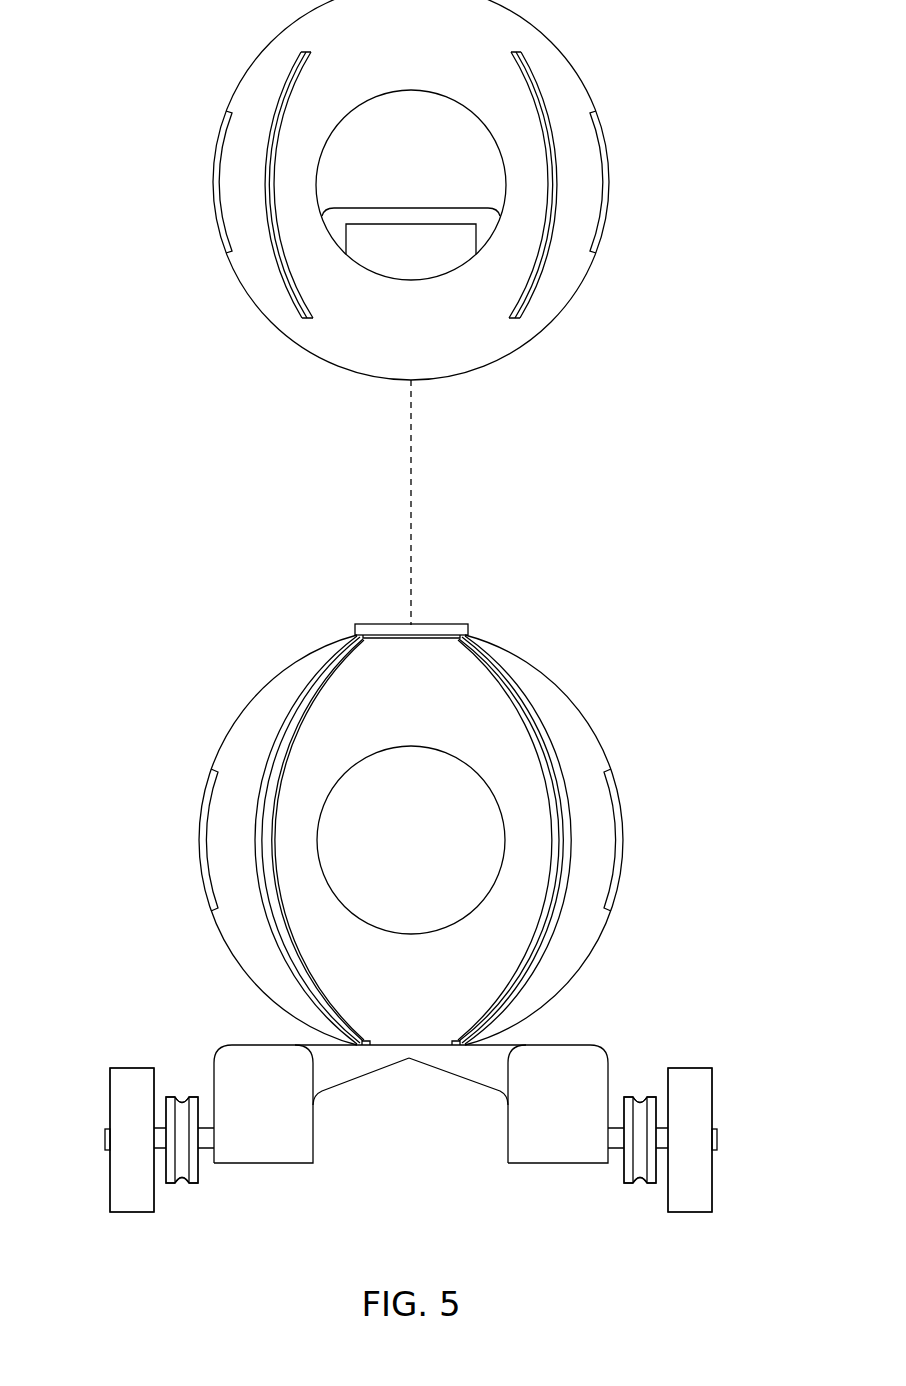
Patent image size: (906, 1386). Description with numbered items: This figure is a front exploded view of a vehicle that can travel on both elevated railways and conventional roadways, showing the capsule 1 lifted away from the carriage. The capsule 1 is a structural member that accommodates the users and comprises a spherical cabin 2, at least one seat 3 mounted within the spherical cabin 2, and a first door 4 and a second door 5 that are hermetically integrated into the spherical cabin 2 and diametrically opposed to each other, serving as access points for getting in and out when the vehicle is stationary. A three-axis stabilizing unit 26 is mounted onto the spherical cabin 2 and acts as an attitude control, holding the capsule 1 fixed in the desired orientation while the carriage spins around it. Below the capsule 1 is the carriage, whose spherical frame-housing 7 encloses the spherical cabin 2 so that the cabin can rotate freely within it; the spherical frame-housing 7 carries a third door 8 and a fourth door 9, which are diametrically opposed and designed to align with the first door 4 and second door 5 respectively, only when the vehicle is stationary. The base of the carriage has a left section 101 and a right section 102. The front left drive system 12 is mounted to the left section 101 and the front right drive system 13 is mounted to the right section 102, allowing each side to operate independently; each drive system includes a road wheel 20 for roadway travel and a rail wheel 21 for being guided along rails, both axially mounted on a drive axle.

The capsule 1 is at (148, 124).
The spherical cabin 2 is at (359, 366).
The seat 3 is at (438, 214).
The first door 4 is at (213, 180).
The second door 5 is at (610, 207).
The three-axis stabilizing unit 26 is at (306, 312).
The spherical frame-housing 7 is at (578, 717).
The third door 8 is at (201, 858).
The fourth door 9 is at (623, 843).
The left section 101 is at (584, 1052).
The right section 102 is at (238, 1052).
The front left drive system 12 is at (740, 1189).
The front right drive system 13 is at (80, 1189).
The road wheel 20 is at (145, 1206).
The rail wheel 21 is at (195, 1184).